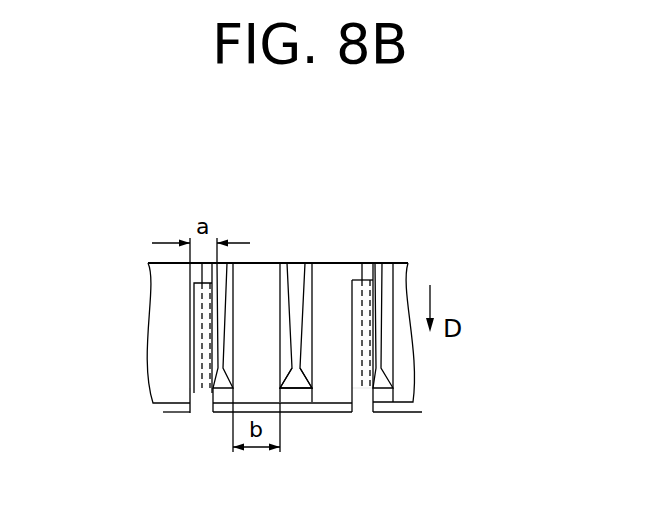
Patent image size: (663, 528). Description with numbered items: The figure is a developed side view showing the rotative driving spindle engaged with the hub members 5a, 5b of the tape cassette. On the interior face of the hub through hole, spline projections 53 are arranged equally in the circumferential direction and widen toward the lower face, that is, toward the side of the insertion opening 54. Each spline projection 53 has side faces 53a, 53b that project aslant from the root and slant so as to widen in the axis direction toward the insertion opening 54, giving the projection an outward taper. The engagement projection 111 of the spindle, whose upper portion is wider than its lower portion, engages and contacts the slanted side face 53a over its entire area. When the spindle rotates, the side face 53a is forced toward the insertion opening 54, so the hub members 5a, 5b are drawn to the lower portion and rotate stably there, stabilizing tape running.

The hub member 5a is at (289, 286).
The hub member 5b is at (356, 250).
The spline projection 53 is at (302, 266).
The side face 53a is at (285, 263).
The side face 53b is at (305, 355).
The insertion opening 54 is at (313, 405).
The engagement projection 111 is at (205, 403).